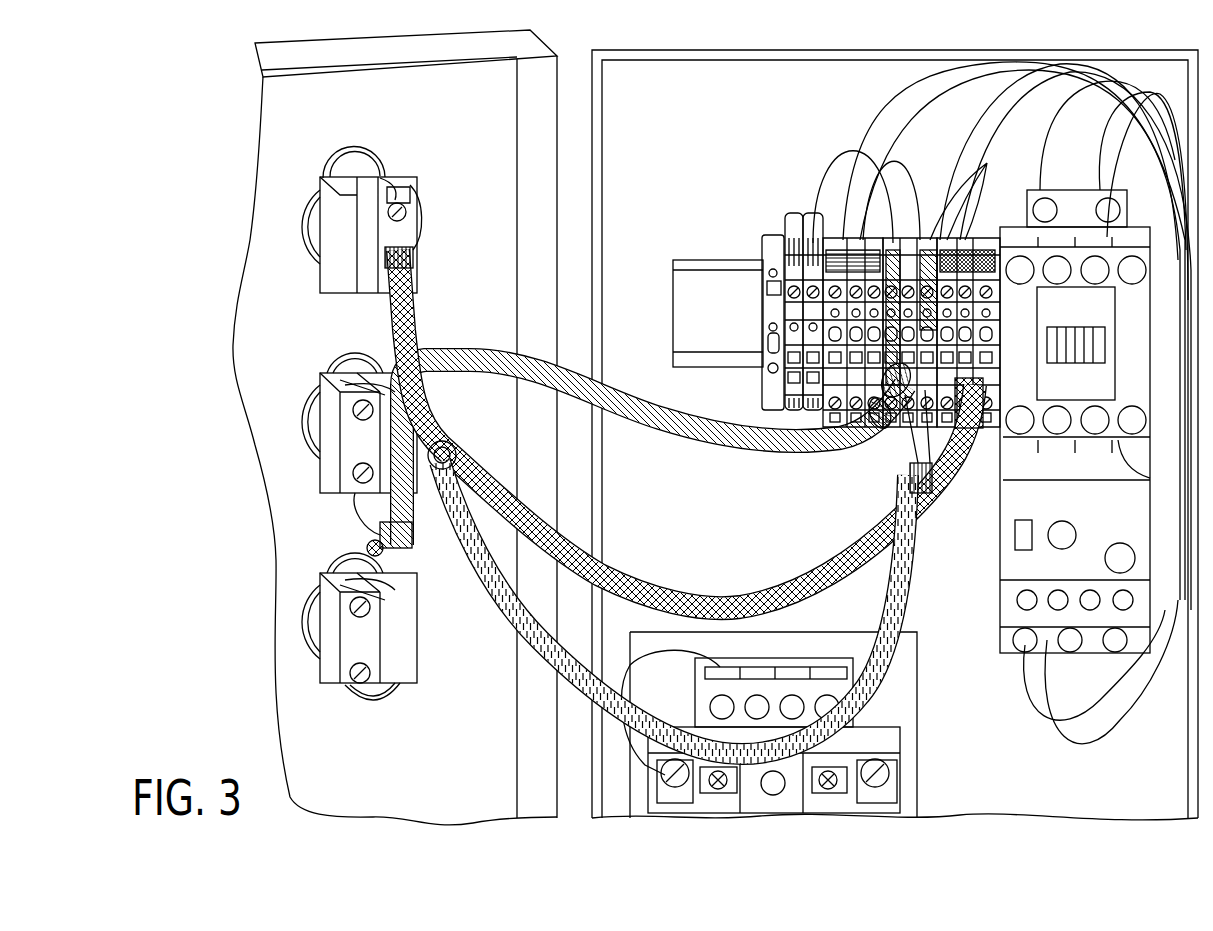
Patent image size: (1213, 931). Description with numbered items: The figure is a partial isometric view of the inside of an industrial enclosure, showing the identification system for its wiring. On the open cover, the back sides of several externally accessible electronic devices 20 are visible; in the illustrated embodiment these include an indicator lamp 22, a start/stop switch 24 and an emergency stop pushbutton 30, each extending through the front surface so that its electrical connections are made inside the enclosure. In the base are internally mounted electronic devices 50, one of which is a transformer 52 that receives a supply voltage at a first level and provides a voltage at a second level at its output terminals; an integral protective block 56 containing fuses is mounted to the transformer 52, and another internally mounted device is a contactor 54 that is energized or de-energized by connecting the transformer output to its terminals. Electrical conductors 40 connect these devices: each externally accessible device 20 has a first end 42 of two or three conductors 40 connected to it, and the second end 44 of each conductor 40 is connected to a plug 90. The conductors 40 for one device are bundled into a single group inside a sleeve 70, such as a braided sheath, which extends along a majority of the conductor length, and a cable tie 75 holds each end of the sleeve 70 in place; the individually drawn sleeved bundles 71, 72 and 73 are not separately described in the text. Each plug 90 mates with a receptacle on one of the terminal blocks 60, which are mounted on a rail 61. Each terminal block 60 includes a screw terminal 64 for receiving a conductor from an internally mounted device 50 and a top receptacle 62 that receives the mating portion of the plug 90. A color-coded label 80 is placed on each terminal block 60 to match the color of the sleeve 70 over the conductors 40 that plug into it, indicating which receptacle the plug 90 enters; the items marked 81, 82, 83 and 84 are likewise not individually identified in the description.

The externally accessible electronic devices 20 is at (311, 181).
The indicator lamp 22 is at (302, 232).
The start/stop switch 24 is at (300, 432).
The emergency stop pushbutton 30 is at (302, 643).
The electrical conductors 40 is at (413, 218).
The first end 42 is at (395, 178).
The second end 44 is at (968, 350).
The internally mounted electronic devices 50 is at (1150, 363).
The transformer 52 is at (918, 662).
The contactor 54 is at (1000, 535).
The protective block 56 is at (895, 777).
The terminal blocks 60 is at (712, 320).
The rail 61 is at (710, 305).
The top receptacle 62 is at (835, 362).
The screw terminal 64 is at (857, 178).
The sleeve 70 is at (622, 695).
The cable 71 is at (661, 441).
The cable 72 is at (667, 585).
The cable 73 is at (502, 629).
The cable tie 75 is at (417, 252).
The label 80 is at (835, 272).
The terminal block 81 is at (790, 225).
The terminal block 82 is at (835, 235).
The terminal block 83 is at (878, 240).
The terminal block 84 is at (1005, 237).
The plug 90 is at (975, 441).